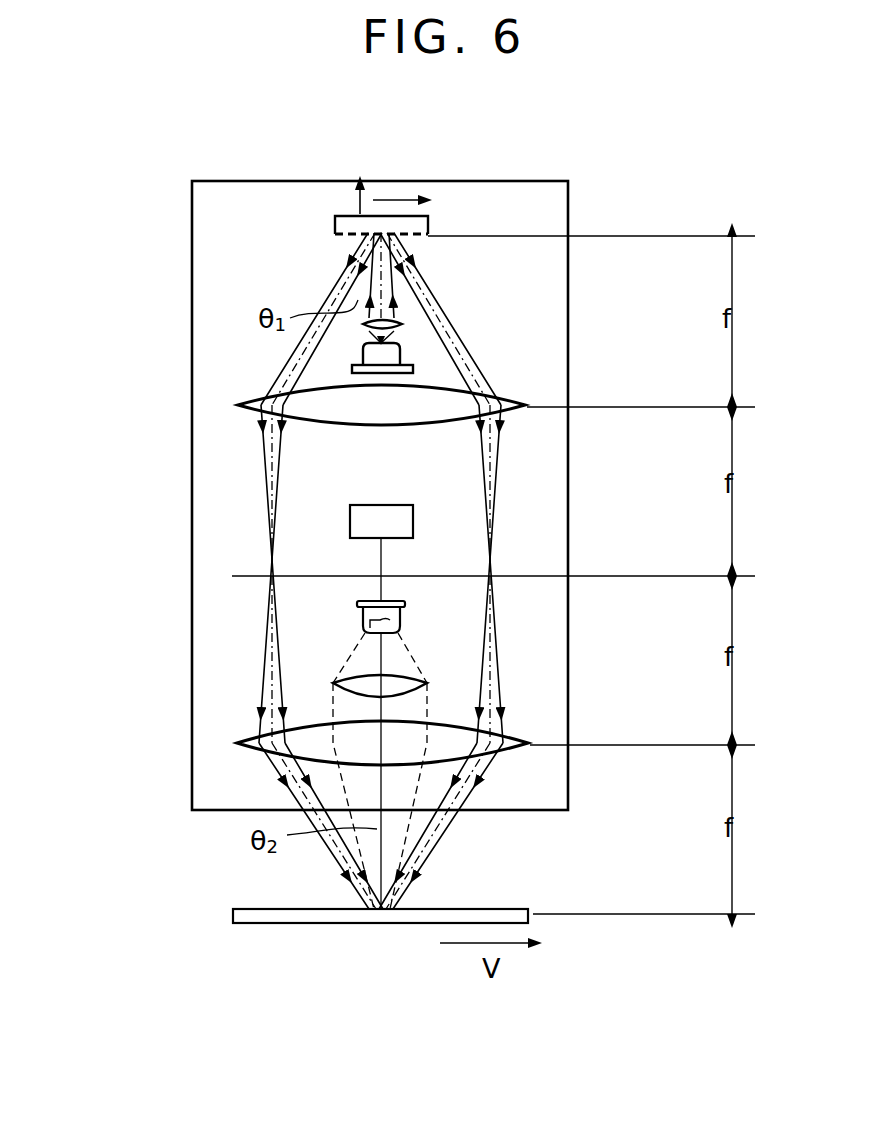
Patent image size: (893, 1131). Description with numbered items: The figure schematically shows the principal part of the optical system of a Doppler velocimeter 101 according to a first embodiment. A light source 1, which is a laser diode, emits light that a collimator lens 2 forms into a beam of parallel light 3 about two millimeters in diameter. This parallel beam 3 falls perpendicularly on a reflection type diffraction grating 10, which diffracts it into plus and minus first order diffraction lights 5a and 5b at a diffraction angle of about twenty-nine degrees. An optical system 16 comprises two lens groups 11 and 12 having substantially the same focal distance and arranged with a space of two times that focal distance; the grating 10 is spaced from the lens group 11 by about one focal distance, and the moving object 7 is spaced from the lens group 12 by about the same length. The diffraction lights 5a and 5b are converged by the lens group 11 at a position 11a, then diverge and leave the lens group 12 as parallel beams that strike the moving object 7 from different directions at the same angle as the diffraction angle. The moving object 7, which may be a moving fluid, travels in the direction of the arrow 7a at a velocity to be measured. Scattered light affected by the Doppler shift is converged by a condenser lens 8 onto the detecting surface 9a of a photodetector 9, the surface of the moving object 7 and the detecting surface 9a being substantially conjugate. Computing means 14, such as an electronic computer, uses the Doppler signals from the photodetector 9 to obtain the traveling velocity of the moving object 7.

The light source 1 is at (401, 356).
The collimator lens 2 is at (404, 324).
The beam of parallel light 3 is at (364, 306).
The diffraction light 5a is at (356, 256).
The diffraction light 5b is at (408, 266).
The moving object 7 is at (283, 915).
The arrow 7a is at (457, 945).
The condenser lens 8 is at (400, 690).
The photodetector 9 is at (412, 581).
The detecting surface 9a is at (400, 623).
The diffraction grating 10 is at (430, 220).
The lens group 11 is at (337, 398).
The position 11a is at (520, 574).
The lens group 12 is at (322, 735).
The computing means 14 is at (390, 515).
The optical system 16 is at (283, 565).
The Doppler velocimeter 101 is at (535, 200).